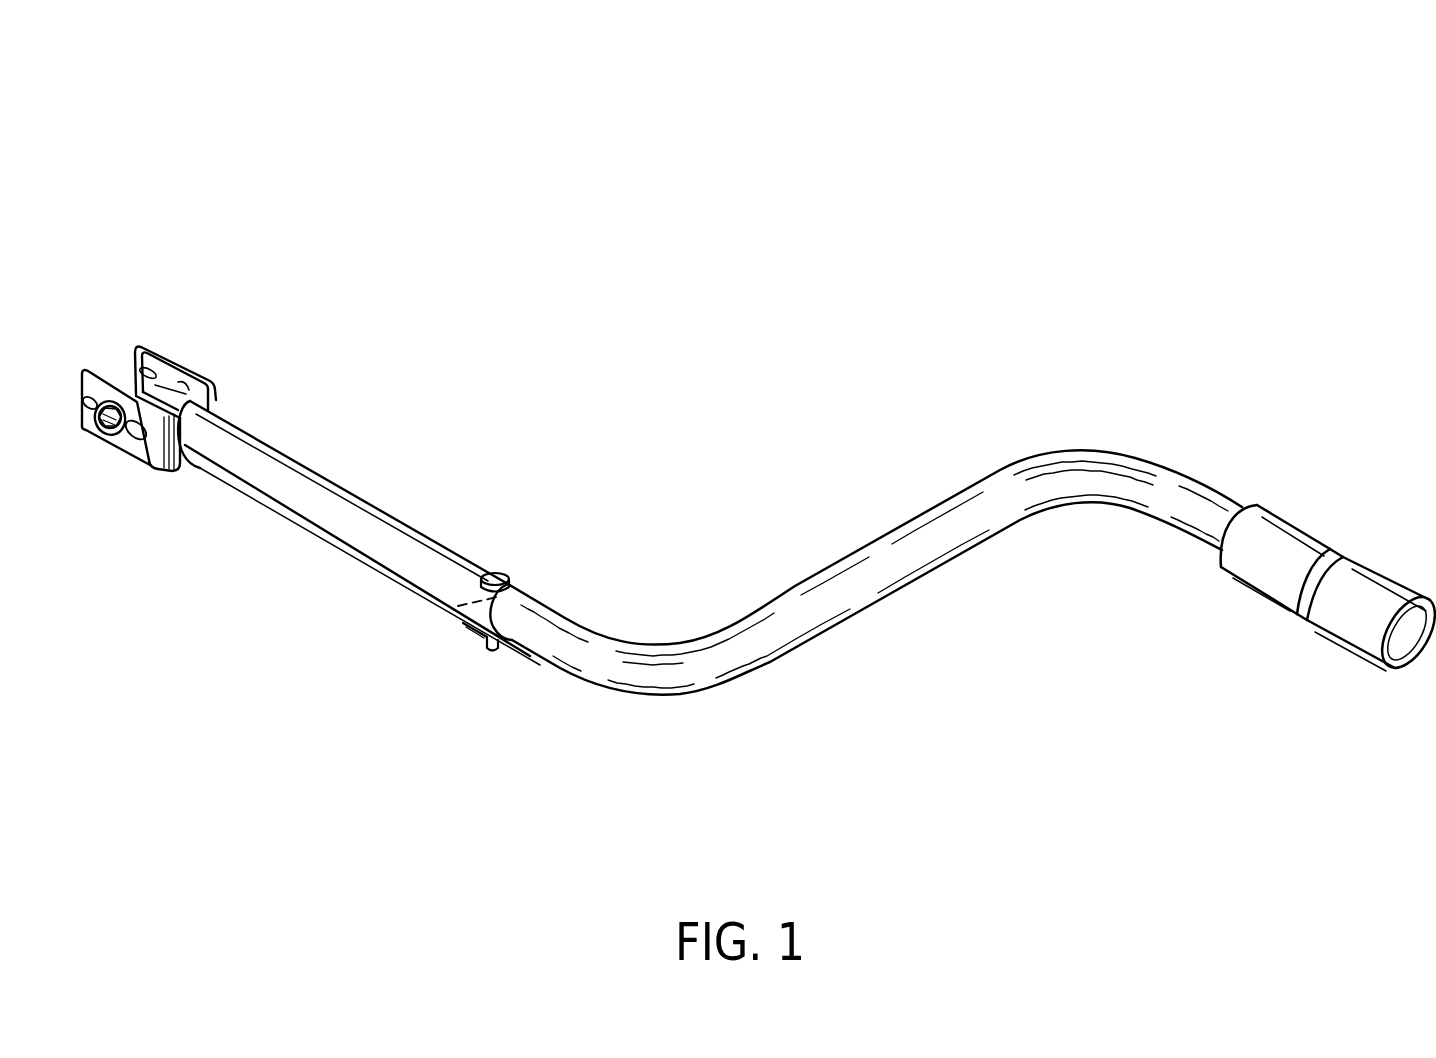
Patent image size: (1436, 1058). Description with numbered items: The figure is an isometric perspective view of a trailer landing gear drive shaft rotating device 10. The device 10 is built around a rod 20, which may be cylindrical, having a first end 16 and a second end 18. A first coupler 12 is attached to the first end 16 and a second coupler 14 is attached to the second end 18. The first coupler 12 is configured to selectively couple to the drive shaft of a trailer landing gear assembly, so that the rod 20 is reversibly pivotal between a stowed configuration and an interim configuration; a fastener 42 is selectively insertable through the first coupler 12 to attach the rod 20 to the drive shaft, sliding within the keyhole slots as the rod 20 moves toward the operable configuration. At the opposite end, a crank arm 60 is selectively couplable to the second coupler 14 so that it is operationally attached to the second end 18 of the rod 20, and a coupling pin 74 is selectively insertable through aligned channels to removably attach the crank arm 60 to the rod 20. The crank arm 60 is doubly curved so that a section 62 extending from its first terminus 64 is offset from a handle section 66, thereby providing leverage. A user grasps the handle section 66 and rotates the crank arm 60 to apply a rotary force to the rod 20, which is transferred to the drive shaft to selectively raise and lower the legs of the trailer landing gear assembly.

The trailer landing gear drive shaft rotating device 10 is at (883, 130).
The first coupler 12 is at (143, 400).
The second coupler 14 is at (453, 607).
The first end 16 is at (186, 408).
The second end 18 is at (521, 650).
The rod 20 is at (340, 525).
The fastener 42 is at (108, 430).
The crank arm 60 is at (903, 566).
The section 62 is at (565, 638).
The first terminus 64 is at (542, 604).
The handle section 66 is at (1290, 532).
The coupling pin 74 is at (496, 572).